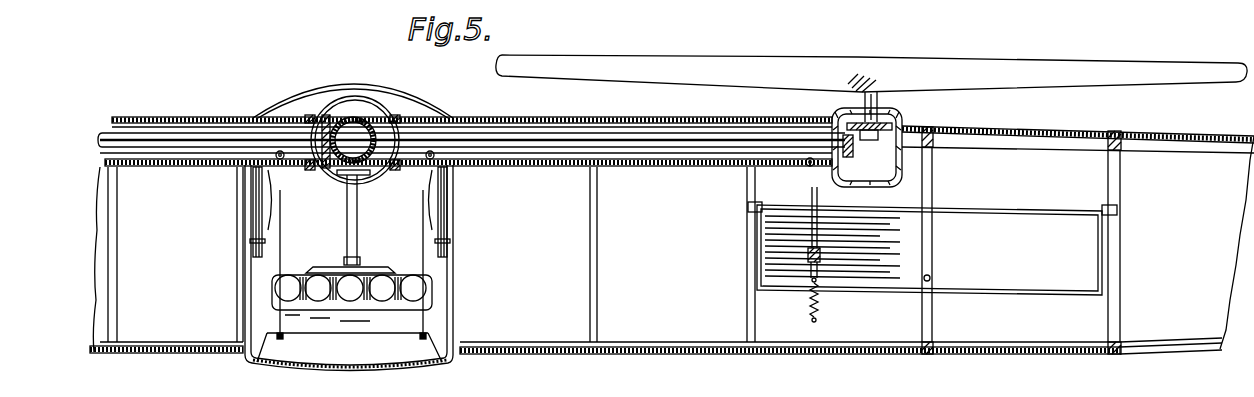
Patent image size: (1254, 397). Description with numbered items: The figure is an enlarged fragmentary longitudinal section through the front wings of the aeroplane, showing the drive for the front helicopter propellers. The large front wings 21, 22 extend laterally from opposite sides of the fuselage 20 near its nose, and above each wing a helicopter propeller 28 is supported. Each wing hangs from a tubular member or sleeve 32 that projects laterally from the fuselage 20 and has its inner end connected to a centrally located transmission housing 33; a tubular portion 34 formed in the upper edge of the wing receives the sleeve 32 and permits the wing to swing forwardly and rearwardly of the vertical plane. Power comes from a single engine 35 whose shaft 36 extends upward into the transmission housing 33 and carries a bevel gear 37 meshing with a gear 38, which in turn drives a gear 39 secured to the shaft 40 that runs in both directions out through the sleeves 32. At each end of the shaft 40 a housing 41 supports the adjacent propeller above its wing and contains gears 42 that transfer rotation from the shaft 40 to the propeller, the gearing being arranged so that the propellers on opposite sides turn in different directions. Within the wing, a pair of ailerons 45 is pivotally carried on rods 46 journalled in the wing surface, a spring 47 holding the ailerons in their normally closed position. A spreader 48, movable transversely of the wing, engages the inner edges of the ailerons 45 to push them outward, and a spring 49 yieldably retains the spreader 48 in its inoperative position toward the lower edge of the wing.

The fuselage 20 is at (267, 368).
The front wing 21 is at (158, 335).
The front wing 22 is at (681, 330).
The helicopter propeller 28 is at (968, 65).
The tubular member or sleeve 32 is at (214, 118).
The transmission housing 33 is at (388, 110).
The tubular portion 34 is at (646, 166).
The engine 35 is at (372, 268).
The engine shaft 36 is at (360, 212).
The bevel gear 37 is at (340, 180).
The gear 38 is at (352, 124).
The gear 39 is at (327, 113).
The shaft 40 is at (493, 149).
The housing 41 is at (902, 120).
The gears 42 is at (855, 155).
The aileron 45 is at (1042, 272).
The rod 46 is at (1026, 207).
The spring 47 is at (930, 276).
The spreader 48 is at (822, 258).
The spring 49 is at (822, 312).